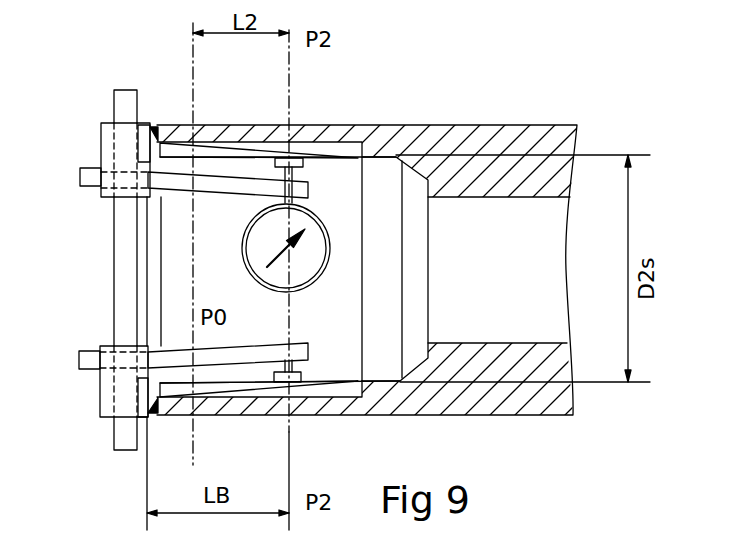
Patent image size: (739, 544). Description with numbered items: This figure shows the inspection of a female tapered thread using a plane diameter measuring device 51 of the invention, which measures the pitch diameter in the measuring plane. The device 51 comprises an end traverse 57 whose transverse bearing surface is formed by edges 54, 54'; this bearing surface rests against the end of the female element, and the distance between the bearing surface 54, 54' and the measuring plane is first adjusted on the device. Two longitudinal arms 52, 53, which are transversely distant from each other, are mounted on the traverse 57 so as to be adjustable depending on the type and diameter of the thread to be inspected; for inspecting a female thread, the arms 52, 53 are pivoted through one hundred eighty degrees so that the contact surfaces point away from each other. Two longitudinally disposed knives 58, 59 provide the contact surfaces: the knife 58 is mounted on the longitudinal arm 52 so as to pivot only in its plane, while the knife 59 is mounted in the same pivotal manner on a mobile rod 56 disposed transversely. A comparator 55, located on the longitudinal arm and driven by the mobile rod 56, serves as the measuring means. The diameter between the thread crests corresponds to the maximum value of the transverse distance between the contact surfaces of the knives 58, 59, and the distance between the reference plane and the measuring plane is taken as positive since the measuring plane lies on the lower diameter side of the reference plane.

The plane diameter measuring device 51 is at (100, 248).
The longitudinal arm 52 is at (180, 356).
The longitudinal arm 53 is at (172, 190).
The edge 54 is at (253, 429).
The edge 54' is at (259, 112).
The comparator 55 is at (246, 249).
The mobile rod 56 is at (300, 166).
The end traverse 57 is at (125, 288).
The knife 58 is at (320, 384).
The knife 59 is at (277, 157).